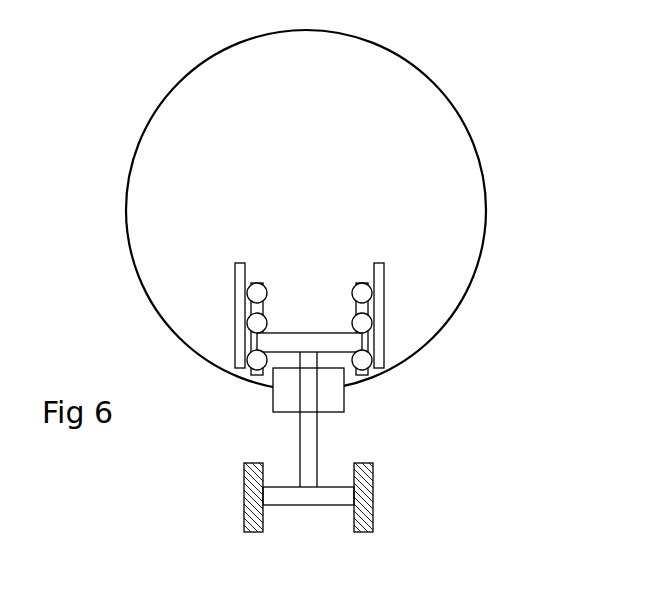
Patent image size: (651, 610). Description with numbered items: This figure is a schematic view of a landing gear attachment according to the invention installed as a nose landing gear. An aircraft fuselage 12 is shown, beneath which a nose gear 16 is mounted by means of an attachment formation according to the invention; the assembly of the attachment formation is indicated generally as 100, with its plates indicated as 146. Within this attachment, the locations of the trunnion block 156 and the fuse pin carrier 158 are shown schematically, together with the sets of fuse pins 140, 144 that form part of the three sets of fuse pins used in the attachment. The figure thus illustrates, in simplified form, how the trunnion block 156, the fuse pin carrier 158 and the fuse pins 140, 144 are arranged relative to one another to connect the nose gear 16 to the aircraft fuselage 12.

The aircraft fuselage 12 is at (478, 150).
The nose gear 16 is at (440, 446).
The positioning apparatus 100 is at (321, 276).
The fuse pins 140 is at (364, 361).
The fuse pins 144 is at (364, 323).
The guide plate 146 is at (364, 291).
The trunnion block 156 is at (255, 346).
The fuse pin carrier 158 is at (255, 308).